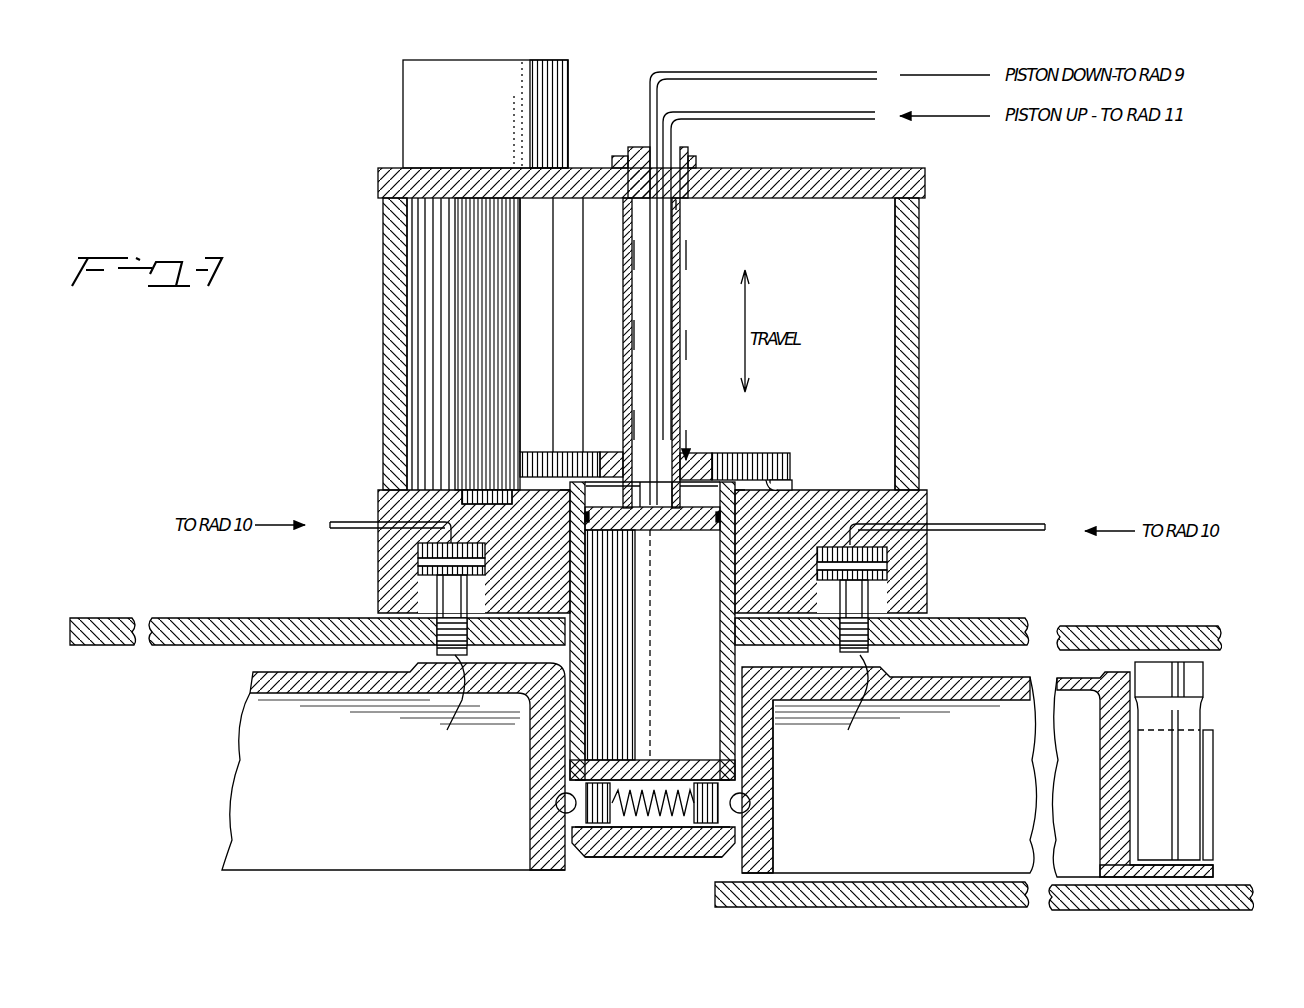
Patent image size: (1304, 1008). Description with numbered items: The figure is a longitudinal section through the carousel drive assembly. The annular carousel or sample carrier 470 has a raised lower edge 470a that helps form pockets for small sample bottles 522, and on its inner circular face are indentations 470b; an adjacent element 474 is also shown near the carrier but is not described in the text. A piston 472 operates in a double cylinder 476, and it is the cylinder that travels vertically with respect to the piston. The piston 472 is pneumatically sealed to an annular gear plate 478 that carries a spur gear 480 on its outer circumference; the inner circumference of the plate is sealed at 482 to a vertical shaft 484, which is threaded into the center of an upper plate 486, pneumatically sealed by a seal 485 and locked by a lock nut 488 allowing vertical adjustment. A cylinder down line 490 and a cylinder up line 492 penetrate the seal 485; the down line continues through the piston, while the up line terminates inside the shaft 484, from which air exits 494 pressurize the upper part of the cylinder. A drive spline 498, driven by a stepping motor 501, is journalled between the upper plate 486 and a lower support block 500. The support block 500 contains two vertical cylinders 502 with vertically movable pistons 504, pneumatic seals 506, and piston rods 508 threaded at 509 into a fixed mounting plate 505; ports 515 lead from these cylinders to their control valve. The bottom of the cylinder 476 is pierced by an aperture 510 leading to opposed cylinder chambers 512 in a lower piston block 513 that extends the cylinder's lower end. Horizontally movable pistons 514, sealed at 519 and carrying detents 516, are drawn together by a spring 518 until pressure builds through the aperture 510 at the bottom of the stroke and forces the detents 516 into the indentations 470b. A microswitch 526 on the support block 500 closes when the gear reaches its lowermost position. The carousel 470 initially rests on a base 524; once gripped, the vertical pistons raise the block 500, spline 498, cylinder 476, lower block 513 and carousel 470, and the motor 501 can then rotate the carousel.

The carousel or sample carrier 470 is at (247, 748).
The raised lower edge 470a is at (1212, 852).
The indentations 470b is at (775, 790).
The piston 472 is at (618, 545).
The side plate 474 is at (1135, 818).
The double cylinder 476 is at (582, 605).
The annular gear plate 478 is at (697, 453).
The spur gear 480 is at (556, 452).
The seal 482 is at (622, 445).
The vertical shaft 484 is at (681, 306).
The seal 485 is at (676, 198).
The upper plate 486 is at (586, 178).
The lock nut 488 is at (696, 160).
The cylinder down line 490 is at (648, 98).
The cylinder up line 492 is at (718, 114).
The air exits 494 is at (630, 530).
The drive spline 498 is at (472, 325).
The lower support block 500 is at (378, 497).
The stepping motor 501 is at (404, 105).
The vertically oriented cylinders 502 is at (418, 550).
The vertically moveable pistons 504 is at (418, 580).
The fixed mounting plate 505 is at (152, 618).
The pneumatic seals 506 is at (418, 564).
The piston rods 508 is at (450, 602).
The threads 509 is at (649, 699).
The aperture 510 is at (658, 768).
The cylinder chambers 512 is at (682, 850).
The lower piston block 513 is at (583, 858).
The horizontally moveable pistons 514 is at (590, 820).
The ports 515 is at (350, 520).
The detents 516 is at (560, 805).
The spring 518 is at (640, 822).
The seals 519 is at (592, 770).
The sample bottles 522 is at (1195, 716).
The base 524 is at (968, 890).
The microswitch 526 is at (760, 492).